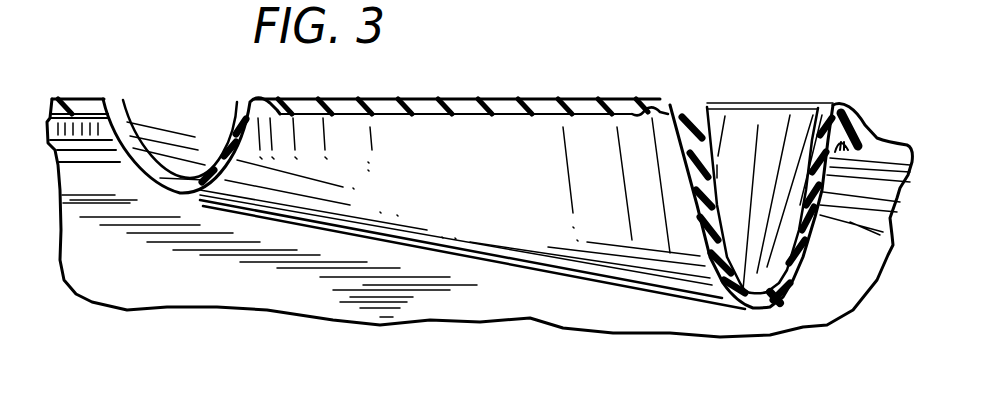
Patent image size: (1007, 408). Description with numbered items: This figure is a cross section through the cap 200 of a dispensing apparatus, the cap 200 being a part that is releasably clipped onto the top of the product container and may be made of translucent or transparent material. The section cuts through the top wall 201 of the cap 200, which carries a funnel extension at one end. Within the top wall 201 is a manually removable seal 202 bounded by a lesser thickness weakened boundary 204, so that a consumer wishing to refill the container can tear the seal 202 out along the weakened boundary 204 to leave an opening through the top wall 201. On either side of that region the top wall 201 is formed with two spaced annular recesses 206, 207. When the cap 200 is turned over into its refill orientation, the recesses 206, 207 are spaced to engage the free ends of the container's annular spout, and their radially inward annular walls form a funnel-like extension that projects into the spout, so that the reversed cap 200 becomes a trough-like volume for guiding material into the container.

The cap 200 is at (218, 306).
The top wall 201 is at (108, 99).
The manually removable seal 202 is at (565, 98).
The lesser thickness weakened boundary 204 is at (642, 102).
The annular recess 206 is at (200, 190).
The annular recess 207 is at (747, 267).